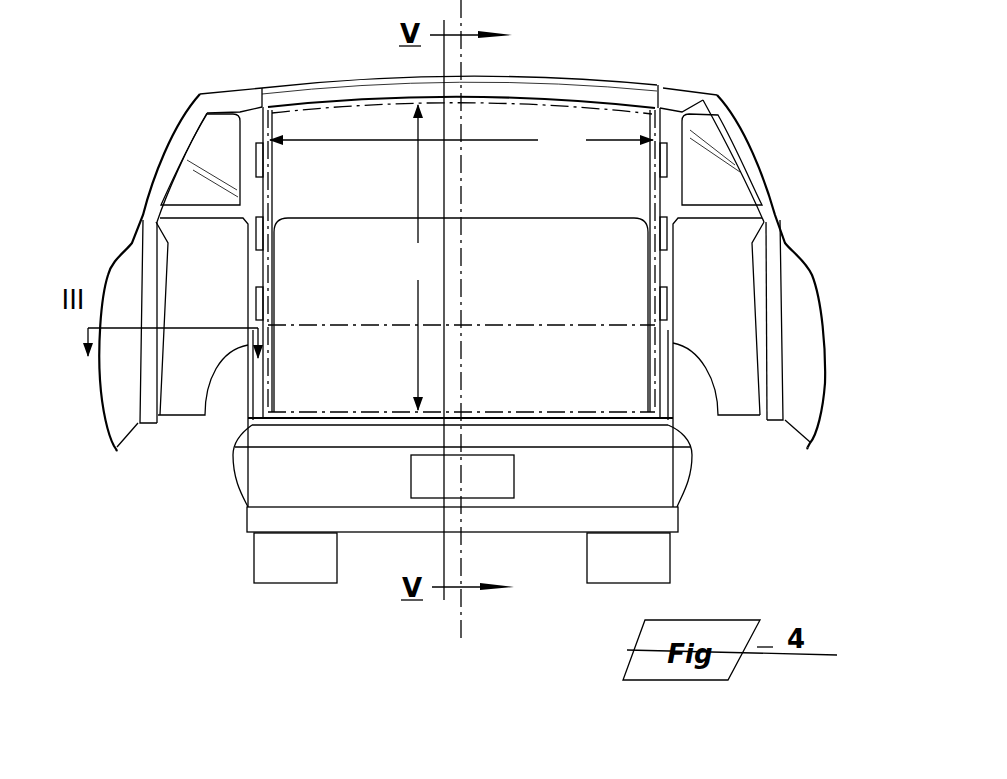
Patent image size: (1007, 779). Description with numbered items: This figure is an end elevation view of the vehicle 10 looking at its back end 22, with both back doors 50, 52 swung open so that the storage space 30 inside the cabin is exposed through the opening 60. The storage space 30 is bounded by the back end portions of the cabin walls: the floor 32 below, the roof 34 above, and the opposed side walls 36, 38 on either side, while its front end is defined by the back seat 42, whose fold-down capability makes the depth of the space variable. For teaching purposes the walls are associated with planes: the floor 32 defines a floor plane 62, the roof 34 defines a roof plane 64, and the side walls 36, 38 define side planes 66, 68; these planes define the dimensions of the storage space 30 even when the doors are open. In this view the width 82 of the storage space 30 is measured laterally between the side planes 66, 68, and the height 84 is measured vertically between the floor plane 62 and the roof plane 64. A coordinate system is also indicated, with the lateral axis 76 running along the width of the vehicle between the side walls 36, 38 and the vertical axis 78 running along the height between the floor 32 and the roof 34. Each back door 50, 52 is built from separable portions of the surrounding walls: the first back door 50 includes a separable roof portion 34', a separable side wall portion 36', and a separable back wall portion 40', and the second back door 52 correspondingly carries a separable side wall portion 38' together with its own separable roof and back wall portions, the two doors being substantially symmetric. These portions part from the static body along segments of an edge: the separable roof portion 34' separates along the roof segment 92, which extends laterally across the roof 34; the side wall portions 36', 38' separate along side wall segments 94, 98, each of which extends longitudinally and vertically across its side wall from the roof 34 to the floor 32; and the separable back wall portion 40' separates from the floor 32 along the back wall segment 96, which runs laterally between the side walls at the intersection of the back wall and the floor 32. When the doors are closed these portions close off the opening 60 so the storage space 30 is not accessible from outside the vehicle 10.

The vehicle 10 is at (818, 98).
The back end 22 is at (707, 490).
The storage space 30 is at (375, 392).
The floor 32 is at (568, 418).
The roof 34 is at (472, 60).
The separable roof portion 34' is at (462, 240).
The side wall 36 is at (712, 357).
The separable side wall portion 36' is at (718, 362).
The side wall 38 is at (291, 261).
The separable side wall portion 38' is at (205, 355).
The separable back wall portion 40' is at (465, 441).
The back seat 42 is at (572, 293).
The first back door 50 is at (834, 258).
The second back door 52 is at (92, 276).
The opening 60 is at (218, 417).
The floor plane 62 is at (488, 410).
The roof plane 64 is at (340, 100).
The side plane 66 is at (653, 170).
The side plane 68 is at (260, 268).
The lateral axis 76 is at (580, 327).
The vertical axis 78 is at (463, 172).
The width 82 is at (461, 139).
The height 84 is at (417, 257).
The roof segment 92 is at (543, 97).
The side wall segment 94 is at (657, 193).
The back wall segment 96 is at (383, 427).
The side wall segment 98 is at (262, 193).